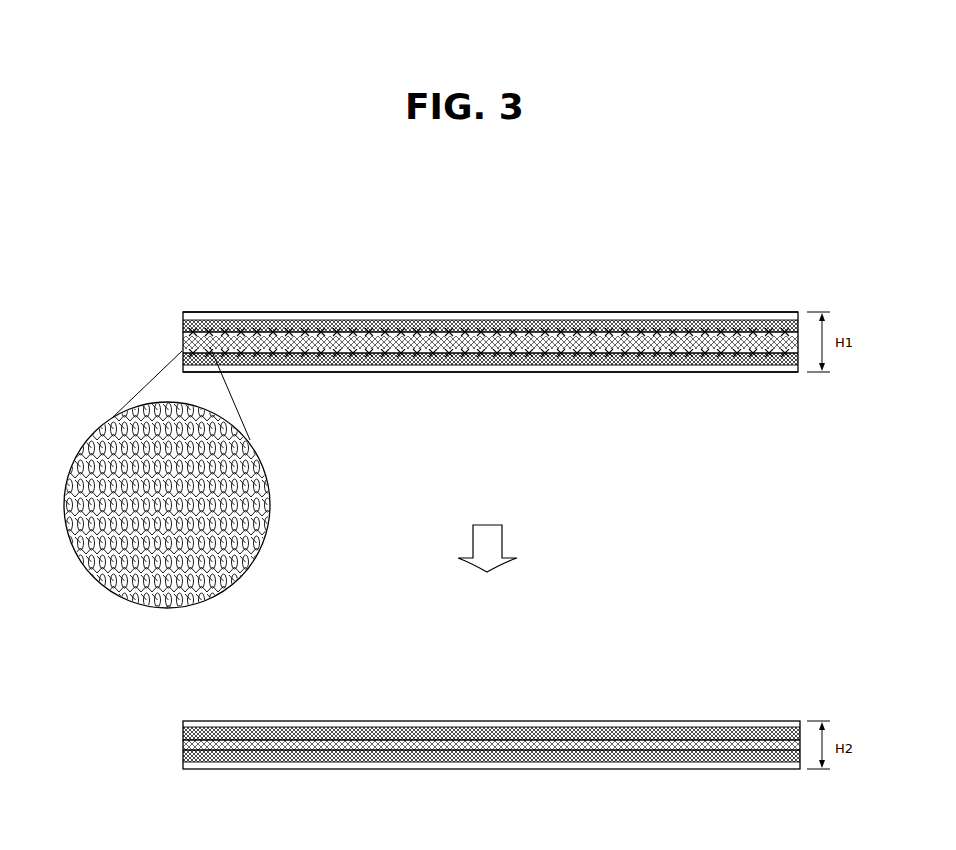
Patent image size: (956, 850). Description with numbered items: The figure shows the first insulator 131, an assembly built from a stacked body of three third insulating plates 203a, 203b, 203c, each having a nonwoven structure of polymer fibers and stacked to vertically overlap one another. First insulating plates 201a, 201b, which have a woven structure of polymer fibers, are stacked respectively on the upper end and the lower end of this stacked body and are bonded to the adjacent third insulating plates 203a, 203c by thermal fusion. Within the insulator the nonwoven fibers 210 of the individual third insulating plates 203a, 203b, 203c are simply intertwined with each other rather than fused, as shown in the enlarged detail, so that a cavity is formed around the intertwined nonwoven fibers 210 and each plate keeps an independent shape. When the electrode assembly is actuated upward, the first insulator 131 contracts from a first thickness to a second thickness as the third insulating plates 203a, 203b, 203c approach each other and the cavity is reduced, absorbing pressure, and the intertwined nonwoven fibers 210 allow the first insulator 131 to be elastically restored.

The first insulator 131 is at (125, 268).
The first insulating plate 201a is at (572, 316).
The first insulating plate 201b is at (773, 370).
The third insulating plate 203a is at (534, 330).
The third insulating plate 203b is at (622, 350).
The third insulating plate 203c is at (695, 366).
The nonwoven fibers 210 is at (255, 532).